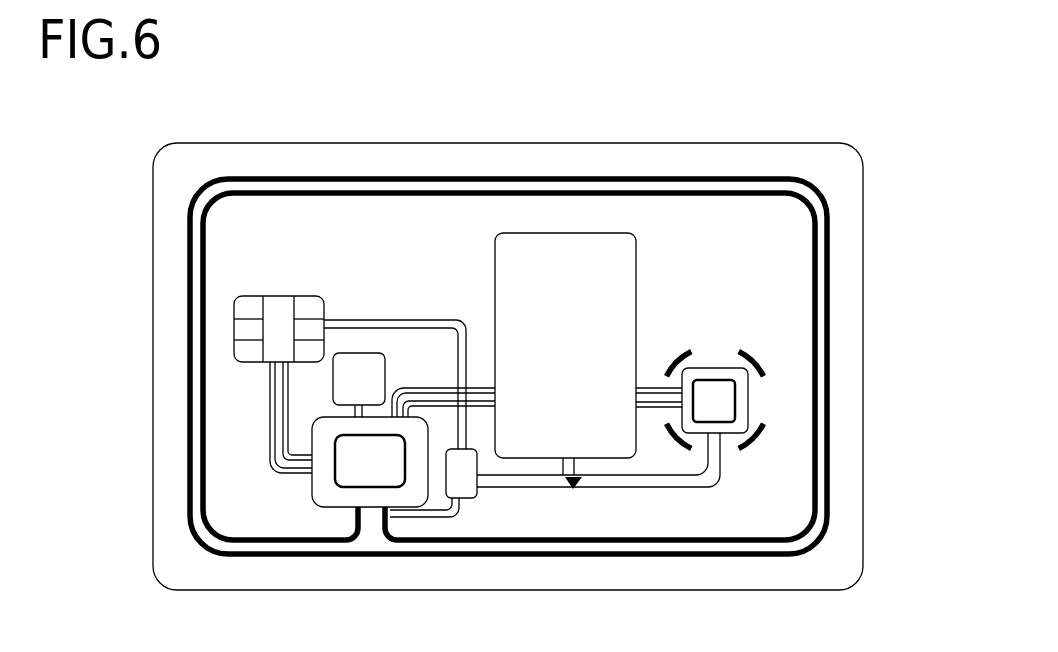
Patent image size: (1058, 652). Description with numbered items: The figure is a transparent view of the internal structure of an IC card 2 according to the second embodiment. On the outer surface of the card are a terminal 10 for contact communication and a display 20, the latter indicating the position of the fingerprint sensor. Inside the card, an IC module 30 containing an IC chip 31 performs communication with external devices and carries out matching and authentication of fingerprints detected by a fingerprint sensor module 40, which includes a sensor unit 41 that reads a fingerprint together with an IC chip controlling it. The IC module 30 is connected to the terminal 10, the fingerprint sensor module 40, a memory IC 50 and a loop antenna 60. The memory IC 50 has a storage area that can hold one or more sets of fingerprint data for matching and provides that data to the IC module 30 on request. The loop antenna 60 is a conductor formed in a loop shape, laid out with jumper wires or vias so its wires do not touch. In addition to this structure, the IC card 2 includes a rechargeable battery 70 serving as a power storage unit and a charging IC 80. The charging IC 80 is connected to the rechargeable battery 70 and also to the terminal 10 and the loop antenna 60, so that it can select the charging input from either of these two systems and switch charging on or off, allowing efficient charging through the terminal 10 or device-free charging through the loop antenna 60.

The IC card 2 is at (791, 119).
The terminal 10 is at (273, 324).
The display 20 is at (753, 446).
The IC module 30 is at (328, 495).
The IC chip 31 is at (417, 478).
The fingerprint sensor module 40 is at (743, 384).
The sensor unit 41 is at (723, 422).
The memory IC 50 is at (357, 370).
The loop antenna 60 is at (827, 318).
The rechargeable battery 70 is at (623, 268).
The charging IC 80 is at (452, 478).